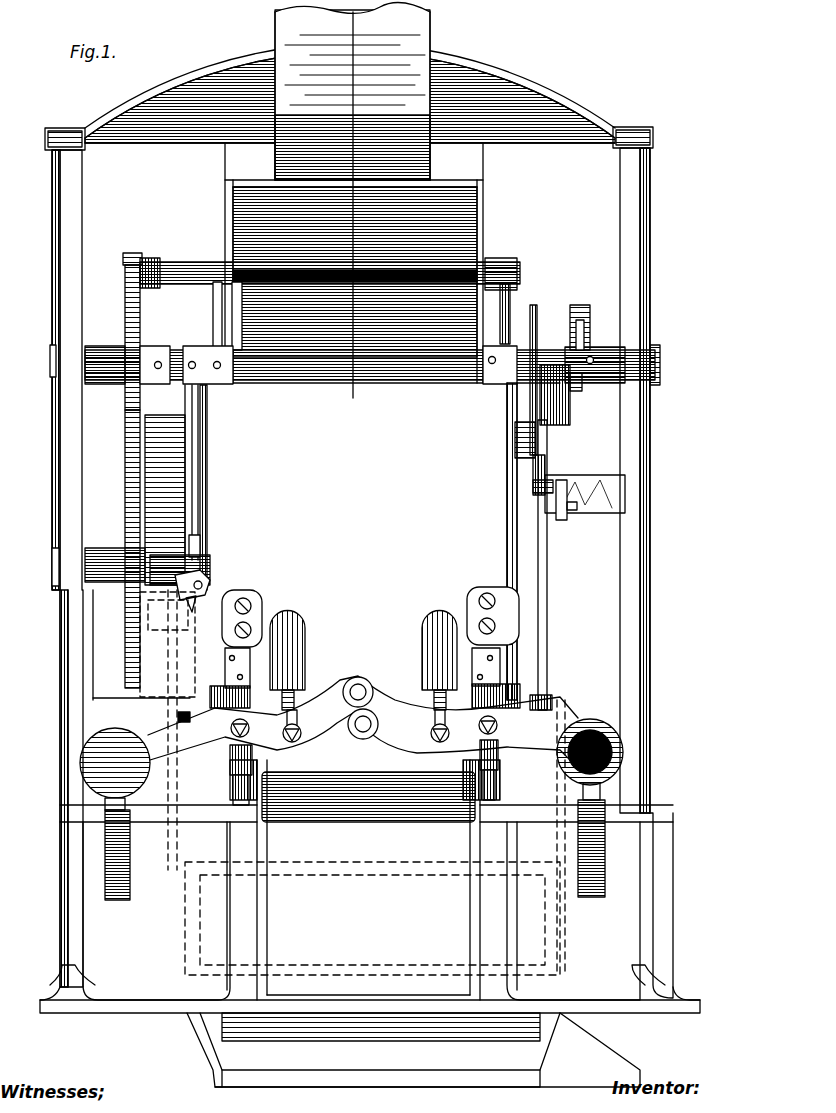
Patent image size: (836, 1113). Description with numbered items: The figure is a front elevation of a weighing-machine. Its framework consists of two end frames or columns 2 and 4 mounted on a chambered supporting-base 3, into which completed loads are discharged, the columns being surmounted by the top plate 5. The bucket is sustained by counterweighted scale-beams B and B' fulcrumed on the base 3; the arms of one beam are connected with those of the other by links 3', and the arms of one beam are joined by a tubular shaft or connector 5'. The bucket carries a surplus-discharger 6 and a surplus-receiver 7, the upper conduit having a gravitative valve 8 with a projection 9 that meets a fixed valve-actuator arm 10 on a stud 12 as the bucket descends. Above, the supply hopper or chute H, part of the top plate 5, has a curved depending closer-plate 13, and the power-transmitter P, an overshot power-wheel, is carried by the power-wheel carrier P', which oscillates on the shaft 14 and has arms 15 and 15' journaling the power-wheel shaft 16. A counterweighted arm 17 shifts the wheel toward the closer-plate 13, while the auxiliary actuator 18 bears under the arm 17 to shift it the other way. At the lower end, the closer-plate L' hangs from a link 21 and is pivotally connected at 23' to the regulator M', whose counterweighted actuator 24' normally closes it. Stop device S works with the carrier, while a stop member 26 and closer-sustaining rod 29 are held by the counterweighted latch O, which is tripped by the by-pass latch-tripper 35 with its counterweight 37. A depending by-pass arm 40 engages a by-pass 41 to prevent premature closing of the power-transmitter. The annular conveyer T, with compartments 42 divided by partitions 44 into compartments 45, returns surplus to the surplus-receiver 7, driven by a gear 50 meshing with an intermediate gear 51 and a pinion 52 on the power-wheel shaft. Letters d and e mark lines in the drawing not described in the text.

The end frame or column 2 is at (62, 312).
The chambered supporting-base 3 is at (370, 946).
The end frame or column 4 is at (640, 300).
The top plate 5 is at (350, 89).
The surplus-discharger conduit 6 is at (202, 560).
The surplus-receiver conduit 7 is at (200, 814).
The gravitative valve 8 is at (208, 580).
The projection 9 is at (196, 603).
The valve-actuator arm 10 is at (160, 590).
The stud 12 is at (52, 560).
The curved depending closer-plate 13 is at (482, 210).
The shaft 14 is at (48, 366).
The outwardly-extending arm 15 is at (201, 316).
The outwardly-extending arm 15' is at (525, 307).
The power-wheel shaft 16 is at (512, 270).
The counterweighted arm 17 is at (585, 305).
The auxiliary actuator 18 is at (566, 422).
The link 21 is at (210, 690).
The pivotal connection 23' is at (342, 814).
The counterweighted actuator 24' is at (374, 696).
The stop member 26 is at (534, 320).
The closer-sustaining rod 29 is at (546, 622).
The by-pass latch-tripper 35 is at (538, 473).
The counterweight 37 is at (562, 515).
The depending by-pass arm 40 is at (195, 500).
The by-pass 41 is at (200, 536).
The conveyer compartment 42 is at (186, 462).
The partition 44 is at (176, 418).
The compartment 45 is at (192, 473).
The gear 50 is at (127, 475).
The intermediate gear 51 is at (127, 392).
The pinion 52 is at (133, 253).
The link 3' is at (369, 701).
The tubular shaft or connector 5' is at (590, 738).
The counterweighted scale-beam B is at (365, 679).
The counterweighted scale-beam B' is at (364, 723).
The supply hopper or chute H is at (352, 91).
The closer-plate L' is at (365, 880).
The regulator M' is at (345, 782).
The counterweighted latch O is at (518, 448).
The power-transmitter and stream-controller P is at (337, 272).
The power-wheel carrier P' is at (212, 316).
The stop device S is at (372, 350).
The annular conveyer or transferring-receiver T is at (165, 491).
The center line d is at (351, 216).
The line e is at (113, 698).